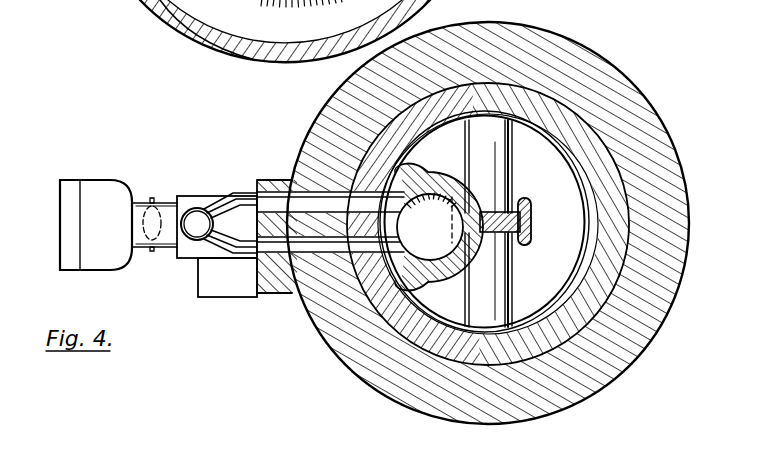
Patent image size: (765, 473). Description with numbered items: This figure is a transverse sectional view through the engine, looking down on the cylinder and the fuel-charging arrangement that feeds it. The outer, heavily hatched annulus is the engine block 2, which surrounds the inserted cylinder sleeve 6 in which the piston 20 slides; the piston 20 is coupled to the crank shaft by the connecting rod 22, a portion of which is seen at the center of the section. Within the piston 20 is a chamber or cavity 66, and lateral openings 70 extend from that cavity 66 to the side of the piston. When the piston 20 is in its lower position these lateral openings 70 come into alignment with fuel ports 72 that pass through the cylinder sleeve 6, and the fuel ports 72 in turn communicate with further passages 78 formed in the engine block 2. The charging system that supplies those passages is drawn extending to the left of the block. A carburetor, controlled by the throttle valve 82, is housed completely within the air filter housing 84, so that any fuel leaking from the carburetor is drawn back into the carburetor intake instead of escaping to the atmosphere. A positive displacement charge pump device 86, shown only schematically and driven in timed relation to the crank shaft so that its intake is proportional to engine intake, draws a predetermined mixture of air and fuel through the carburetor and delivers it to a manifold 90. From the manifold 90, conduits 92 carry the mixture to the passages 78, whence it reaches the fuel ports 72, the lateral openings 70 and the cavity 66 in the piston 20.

The engine block 2 is at (556, 56).
The cylinder sleeve 6 is at (584, 125).
The piston 20 is at (586, 190).
The connecting rod 22 is at (530, 239).
The cavity 66 is at (452, 181).
The lateral openings 70 is at (393, 251).
The fuel ports 72 is at (353, 200).
The passages 78 is at (297, 177).
The throttle valve 82 is at (152, 200).
The air filter housing 84 is at (92, 266).
The charge pump device 86 is at (208, 281).
The manifold 90 is at (197, 207).
The conduits 92 is at (241, 191).